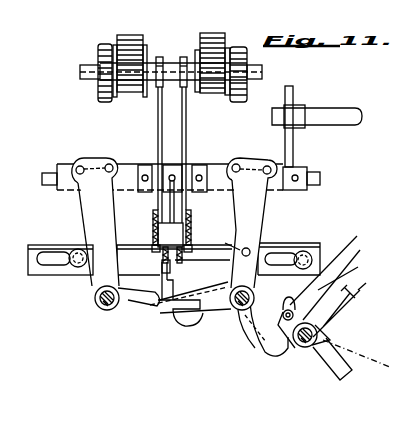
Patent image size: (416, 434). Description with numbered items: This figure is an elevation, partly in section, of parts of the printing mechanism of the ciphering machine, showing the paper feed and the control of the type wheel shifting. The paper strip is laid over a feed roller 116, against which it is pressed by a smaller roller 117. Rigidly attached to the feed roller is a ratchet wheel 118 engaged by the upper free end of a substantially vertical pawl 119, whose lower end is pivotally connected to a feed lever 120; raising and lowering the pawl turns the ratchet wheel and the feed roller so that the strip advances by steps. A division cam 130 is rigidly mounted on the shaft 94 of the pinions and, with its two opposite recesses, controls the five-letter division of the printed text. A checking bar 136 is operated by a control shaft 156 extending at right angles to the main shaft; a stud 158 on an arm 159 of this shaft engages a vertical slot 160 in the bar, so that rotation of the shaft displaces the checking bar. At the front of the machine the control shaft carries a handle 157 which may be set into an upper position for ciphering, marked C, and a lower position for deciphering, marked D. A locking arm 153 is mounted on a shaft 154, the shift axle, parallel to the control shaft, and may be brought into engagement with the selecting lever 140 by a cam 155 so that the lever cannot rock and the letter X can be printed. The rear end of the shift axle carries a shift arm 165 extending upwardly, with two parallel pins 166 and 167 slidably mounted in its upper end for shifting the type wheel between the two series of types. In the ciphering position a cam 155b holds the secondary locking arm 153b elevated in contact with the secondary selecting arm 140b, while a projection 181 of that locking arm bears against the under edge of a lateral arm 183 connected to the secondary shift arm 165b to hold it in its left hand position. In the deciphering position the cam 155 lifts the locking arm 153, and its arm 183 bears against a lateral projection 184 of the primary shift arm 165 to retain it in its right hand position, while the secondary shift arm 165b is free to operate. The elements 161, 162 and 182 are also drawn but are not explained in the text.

The shaft 94 is at (341, 115).
The feed roller 116 is at (223, 50).
The smaller roller 117 is at (200, 36).
The ratchet wheel 118 is at (182, 57).
The pawl 119 is at (187, 117).
The feed lever 120 is at (190, 232).
The division cam 130 is at (293, 96).
The checking bar 136 is at (45, 248).
The selecting lever 140 is at (184, 250).
The secondary selecting arm 140b is at (152, 250).
The locking arm 153 is at (195, 317).
The secondary locking arm 153b is at (177, 322).
The shaft 154 is at (245, 311).
The cam 155 is at (323, 352).
The cam 155b is at (301, 347).
The control shaft 156 is at (320, 333).
The handle 157 is at (345, 305).
The stud 158 is at (344, 280).
The arm 159 is at (351, 275).
The vertical slot 160 is at (337, 262).
The slot 161 is at (55, 268).
The pin 162 is at (78, 268).
The shift arm 165 is at (237, 211).
The secondary shift arm 165b is at (90, 203).
The pin 166 is at (232, 164).
The pin 167 is at (265, 165).
The projection 181 is at (152, 310).
The link 182 is at (127, 307).
The lateral arm 183 is at (224, 240).
The lateral projection 184 is at (250, 250).
The ciphering position C is at (368, 282).
The deciphering position D is at (359, 356).